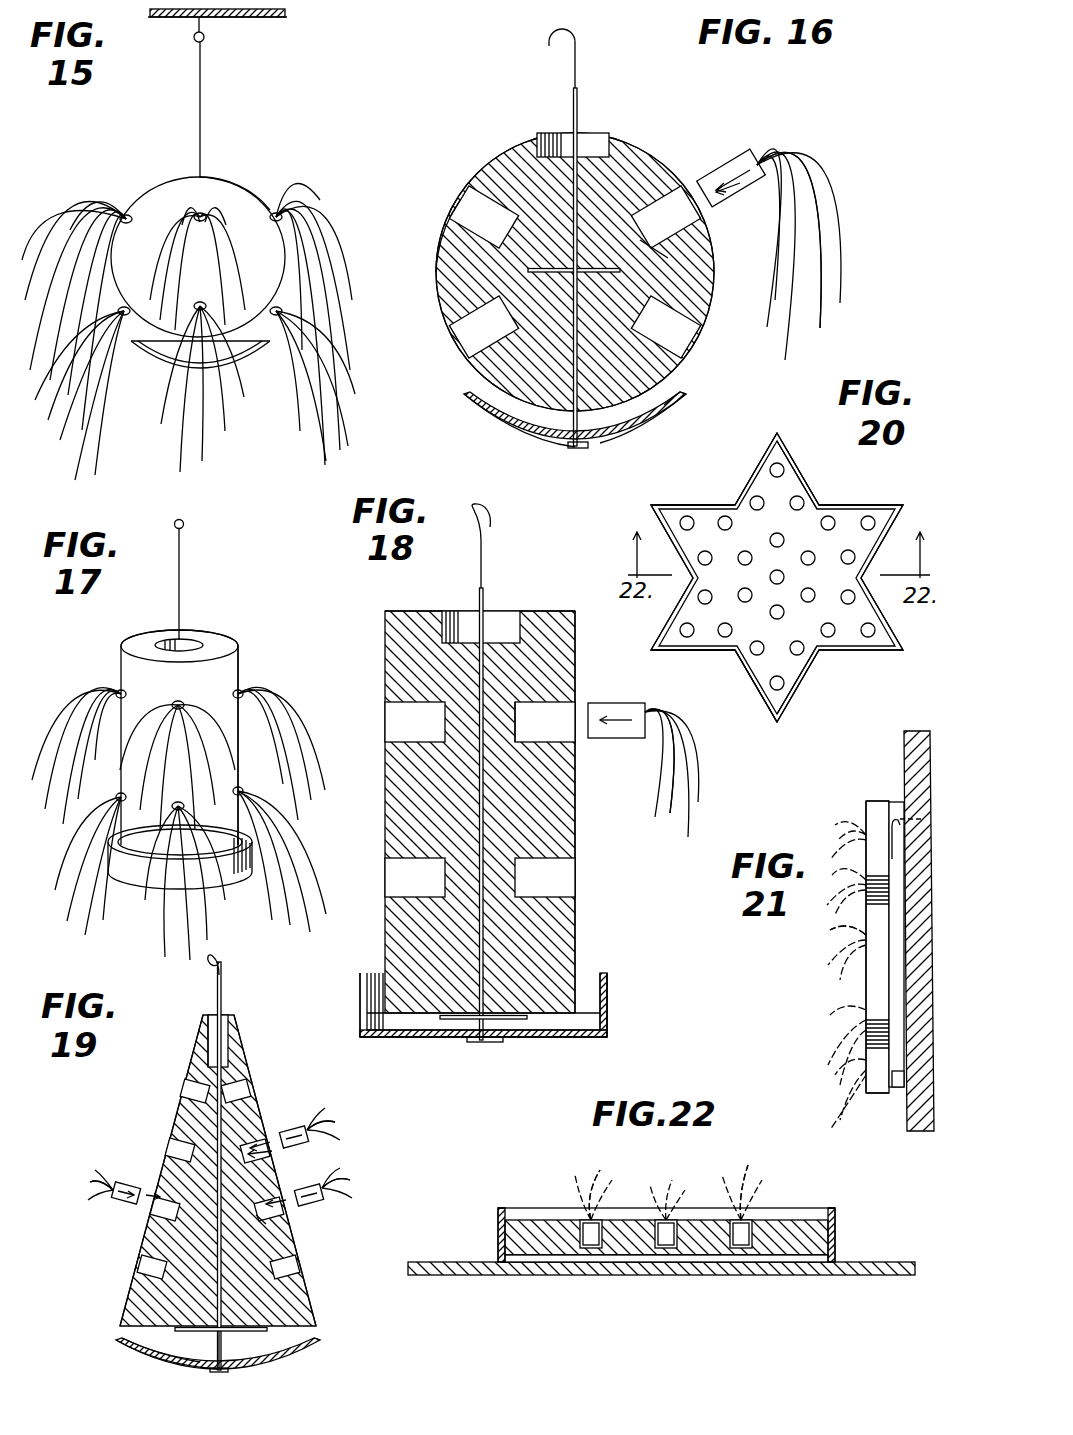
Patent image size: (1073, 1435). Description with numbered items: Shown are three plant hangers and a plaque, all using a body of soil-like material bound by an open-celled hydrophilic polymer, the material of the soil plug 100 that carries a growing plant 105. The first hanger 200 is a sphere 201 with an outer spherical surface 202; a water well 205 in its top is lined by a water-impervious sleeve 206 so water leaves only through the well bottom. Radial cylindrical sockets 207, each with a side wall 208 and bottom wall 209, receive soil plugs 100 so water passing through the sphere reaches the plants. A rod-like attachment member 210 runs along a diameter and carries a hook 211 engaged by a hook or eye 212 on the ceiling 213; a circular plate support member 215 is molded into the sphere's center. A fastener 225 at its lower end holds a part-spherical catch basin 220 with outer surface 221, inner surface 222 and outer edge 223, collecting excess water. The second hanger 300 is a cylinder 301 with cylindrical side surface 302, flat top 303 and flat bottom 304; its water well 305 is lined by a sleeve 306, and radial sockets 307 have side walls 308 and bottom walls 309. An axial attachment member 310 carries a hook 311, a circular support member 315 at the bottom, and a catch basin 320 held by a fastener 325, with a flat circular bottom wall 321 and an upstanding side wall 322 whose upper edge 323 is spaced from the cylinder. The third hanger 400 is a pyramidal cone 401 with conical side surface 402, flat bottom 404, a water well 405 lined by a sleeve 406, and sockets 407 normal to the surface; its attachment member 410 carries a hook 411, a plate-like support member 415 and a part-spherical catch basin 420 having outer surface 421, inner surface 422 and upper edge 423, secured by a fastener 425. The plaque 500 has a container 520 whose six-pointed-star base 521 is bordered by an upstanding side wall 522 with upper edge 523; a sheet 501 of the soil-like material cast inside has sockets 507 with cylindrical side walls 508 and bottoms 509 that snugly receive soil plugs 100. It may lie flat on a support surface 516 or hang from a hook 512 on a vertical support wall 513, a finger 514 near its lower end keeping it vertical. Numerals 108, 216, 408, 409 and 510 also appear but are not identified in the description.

In FIG. 15, the soil plug 100 is at (200, 213).
In FIG. 16, the soil plug 100 is at (742, 152).
In FIG. 17, the soil plug 100 is at (172, 805).
In FIG. 18, the soil plug 100 is at (612, 710).
In FIG. 19, the soil plug 100 is at (300, 1130).
In FIG. 22, the soil plug 100 is at (585, 1222).
In FIG. 15, the growing plant 105 is at (296, 178).
In FIG. 16, the growing plant 105 is at (838, 165).
In FIG. 17, the growing plant 105 is at (88, 690).
In FIG. 18, the growing plant 105 is at (685, 800).
In FIG. 19, the growing plant 105 is at (336, 1135).
In FIG. 21, the growing plant 105 is at (840, 835).
In FIG. 22, the growing plant 105 is at (755, 1178).
In FIG. 16, the leaf 108 is at (805, 130).
In FIG. 18, the leaf 108 is at (660, 800).
In FIG. 19, the leaf 108 is at (338, 1122).
In FIG. 21, the leaf 108 is at (835, 950).
In FIG. 22, the leaf 108 is at (650, 1185).
In FIG. 15, the hanger 200 is at (152, 178).
In FIG. 16, the hanger 200 is at (480, 150).
In FIG. 16, the sphere 201 is at (448, 255).
In FIG. 15, the outer spherical surface 202 is at (232, 195).
In FIG. 16, the outer spherical surface 202 is at (438, 285).
In FIG. 16, the water well 205 is at (596, 145).
In FIG. 16, the sleeve 206 is at (540, 133).
In FIG. 16, the sockets 207 is at (468, 205).
In FIG. 16, the side wall 208 is at (690, 180).
In FIG. 16, the bottom wall 209 is at (672, 248).
In FIG. 16, the attachment member 210 is at (578, 76).
In FIG. 16, the hook 211 is at (575, 30).
In FIG. 15, the hook or eye 212 is at (205, 35).
In FIG. 15, the ceiling 213 is at (272, 18).
In FIG. 16, the support member 215 is at (590, 268).
In FIG. 15, the hanging string 216 is at (203, 109).
In FIG. 15, the catch basin 220 is at (240, 360).
In FIG. 16, the catch basin 220 is at (630, 434).
In FIG. 16, the outer surface 221 is at (500, 420).
In FIG. 16, the inner surface 222 is at (665, 400).
In FIG. 16, the outer edge 223 is at (668, 398).
In FIG. 16, the fastener 225 is at (580, 449).
In FIG. 17, the hanger 300 is at (160, 628).
In FIG. 18, the hanger 300 is at (378, 635).
In FIG. 17, the cylinder 301 is at (225, 645).
In FIG. 18, the cylinder 301 is at (545, 625).
In FIG. 17, the side surface 302 is at (236, 675).
In FIG. 18, the side surface 302 is at (577, 652).
In FIG. 17, the flat top 303 is at (130, 640).
In FIG. 18, the flat top 303 is at (418, 612).
In FIG. 18, the flat bottom 304 is at (560, 1010).
In FIG. 18, the water well 305 is at (505, 610).
In FIG. 17, the sleeve 306 is at (190, 638).
In FIG. 18, the sleeve 306 is at (515, 610).
In FIG. 18, the sockets 307 is at (410, 727).
In FIG. 18, the side wall 308 is at (555, 740).
In FIG. 18, the bottom wall 309 is at (540, 750).
In FIG. 17, the attachment member 310 is at (181, 566).
In FIG. 18, the attachment member 310 is at (478, 568).
In FIG. 17, the hook 311 is at (184, 521).
In FIG. 18, the hook 311 is at (484, 505).
In FIG. 18, the support member 315 is at (458, 1020).
In FIG. 17, the catch basin 320 is at (140, 900).
In FIG. 18, the catch basin 320 is at (400, 1040).
In FIG. 18, the bottom wall 321 is at (520, 1040).
In FIG. 17, the side wall 322 is at (118, 857).
In FIG. 18, the side wall 322 is at (358, 998).
In FIG. 17, the upper edge 323 is at (112, 838).
In FIG. 18, the upper edge 323 is at (370, 972).
In FIG. 18, the fastener 325 is at (485, 1045).
In FIG. 19, the hanger 400 is at (170, 1100).
In FIG. 19, the pyramidal cone 401 is at (245, 1110).
In FIG. 19, the conical side surface 402 is at (160, 1160).
In FIG. 19, the flat bottom 404 is at (270, 1328).
In FIG. 19, the water well 405 is at (226, 1025).
In FIG. 19, the sleeve 406 is at (207, 1015).
In FIG. 19, the sockets 407 is at (242, 1090).
In FIG. 19, the insertion arrow 408 is at (295, 1162).
In FIG. 19, the pocket wall 409 is at (270, 1225).
In FIG. 19, the attachment member 410 is at (217, 990).
In FIG. 19, the hook 411 is at (222, 958).
In FIG. 19, the support member 415 is at (240, 1340).
In FIG. 19, the catch basin 420 is at (190, 1372).
In FIG. 19, the outer surface 421 is at (322, 1342).
In FIG. 19, the inner surface 422 is at (135, 1350).
In FIG. 19, the upper edge 423 is at (130, 1345).
In FIG. 19, the fastener 425 is at (226, 1373).
In FIG. 20, the plaque 500 is at (843, 650).
In FIG. 21, the plaque 500 is at (860, 795).
In FIG. 22, the plaque 500 is at (515, 1190).
In FIG. 20, the sheet 501 is at (788, 495).
In FIG. 22, the sheet 501 is at (535, 1240).
In FIG. 20, the sockets 507 is at (680, 523).
In FIG. 22, the sockets 507 is at (585, 1250).
In FIG. 20, the side wall 508 is at (760, 652).
In FIG. 20, the bottom 509 is at (770, 690).
In FIG. 21, the top edge 510 is at (868, 818).
In FIG. 21, the hook 512 is at (897, 818).
In FIG. 21, the vertical support wall 513 is at (908, 735).
In FIG. 21, the finger 514 is at (896, 1090).
In FIG. 22, the support surface 516 is at (890, 1277).
In FIG. 20, the container 520 is at (688, 505).
In FIG. 21, the container 520 is at (875, 1045).
In FIG. 22, the container 520 is at (842, 1220).
In FIG. 21, the base 521 is at (896, 955).
In FIG. 22, the base 521 is at (710, 1262).
In FIG. 20, the side wall 522 is at (706, 505).
In FIG. 21, the side wall 522 is at (878, 1005).
In FIG. 22, the side wall 522 is at (497, 1230).
In FIG. 22, the upper edge 523 is at (500, 1210).